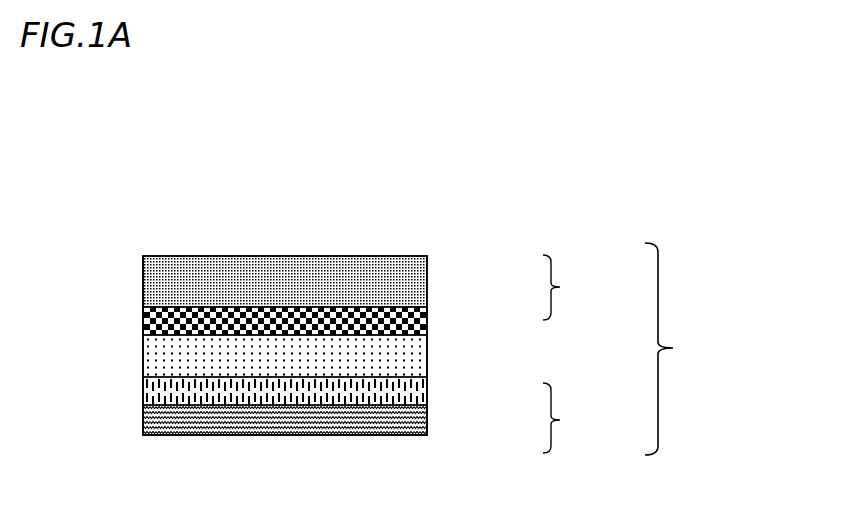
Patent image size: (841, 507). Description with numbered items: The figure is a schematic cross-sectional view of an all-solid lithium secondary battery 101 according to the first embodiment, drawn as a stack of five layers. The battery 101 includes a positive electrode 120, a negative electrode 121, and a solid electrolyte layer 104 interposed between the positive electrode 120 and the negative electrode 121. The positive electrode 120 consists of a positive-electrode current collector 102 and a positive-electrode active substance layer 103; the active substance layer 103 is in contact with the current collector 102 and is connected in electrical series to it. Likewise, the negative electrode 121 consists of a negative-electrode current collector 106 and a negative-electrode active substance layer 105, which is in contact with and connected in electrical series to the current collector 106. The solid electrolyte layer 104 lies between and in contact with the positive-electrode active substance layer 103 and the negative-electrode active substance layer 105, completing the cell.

The all-solid lithium secondary battery 101 is at (437, 349).
The positive-electrode current collector 102 is at (383, 276).
The positive-electrode active substance layer 103 is at (388, 320).
The solid electrolyte layer 104 is at (383, 357).
The negative-electrode active substance layer 105 is at (383, 391).
The negative-electrode current collector 106 is at (388, 426).
The positive electrode 120 is at (377, 294).
The negative electrode 121 is at (380, 415).